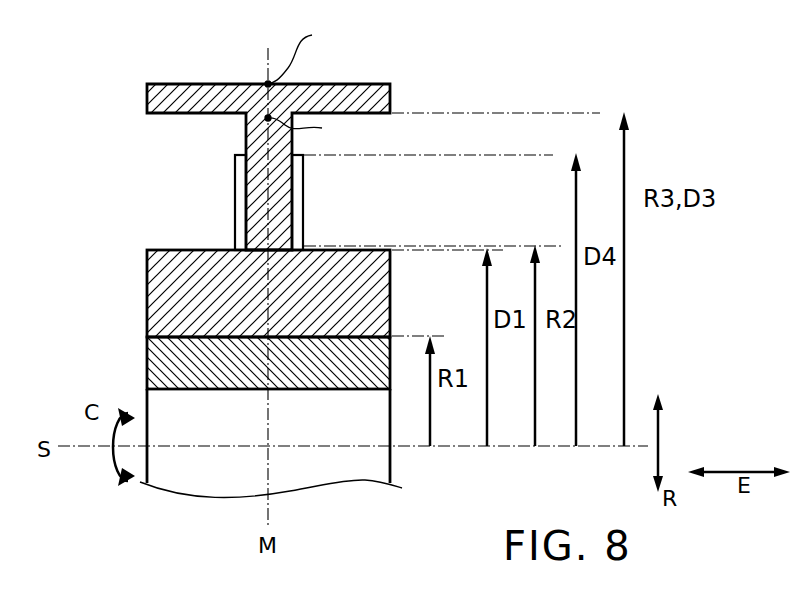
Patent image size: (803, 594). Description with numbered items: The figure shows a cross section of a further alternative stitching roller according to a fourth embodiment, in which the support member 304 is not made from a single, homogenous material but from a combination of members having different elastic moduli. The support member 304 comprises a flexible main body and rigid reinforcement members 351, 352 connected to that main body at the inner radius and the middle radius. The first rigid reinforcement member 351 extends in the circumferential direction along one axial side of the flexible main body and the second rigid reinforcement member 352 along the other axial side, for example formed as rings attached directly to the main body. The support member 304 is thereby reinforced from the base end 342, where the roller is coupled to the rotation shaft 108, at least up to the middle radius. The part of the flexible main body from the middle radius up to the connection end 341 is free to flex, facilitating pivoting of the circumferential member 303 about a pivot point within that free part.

The circumferential member 303 is at (372, 84).
The connection end 341 is at (177, 113).
The support member 304 is at (247, 178).
The first rigid reinforcement member 351 is at (238, 208).
The second rigid reinforcement member 352 is at (298, 203).
The base end 342 is at (163, 249).
The rotation shaft 108 is at (153, 370).